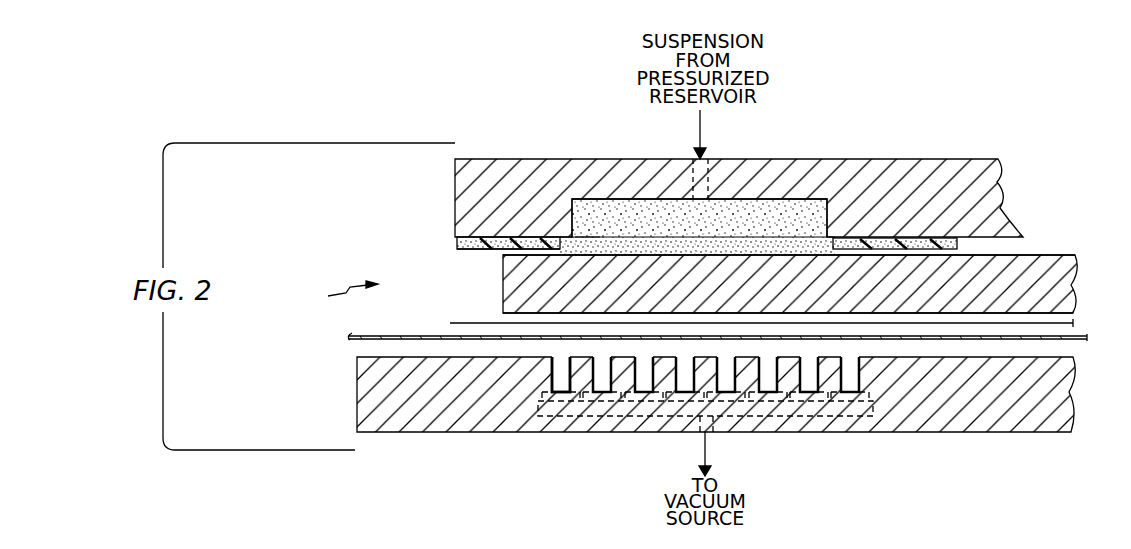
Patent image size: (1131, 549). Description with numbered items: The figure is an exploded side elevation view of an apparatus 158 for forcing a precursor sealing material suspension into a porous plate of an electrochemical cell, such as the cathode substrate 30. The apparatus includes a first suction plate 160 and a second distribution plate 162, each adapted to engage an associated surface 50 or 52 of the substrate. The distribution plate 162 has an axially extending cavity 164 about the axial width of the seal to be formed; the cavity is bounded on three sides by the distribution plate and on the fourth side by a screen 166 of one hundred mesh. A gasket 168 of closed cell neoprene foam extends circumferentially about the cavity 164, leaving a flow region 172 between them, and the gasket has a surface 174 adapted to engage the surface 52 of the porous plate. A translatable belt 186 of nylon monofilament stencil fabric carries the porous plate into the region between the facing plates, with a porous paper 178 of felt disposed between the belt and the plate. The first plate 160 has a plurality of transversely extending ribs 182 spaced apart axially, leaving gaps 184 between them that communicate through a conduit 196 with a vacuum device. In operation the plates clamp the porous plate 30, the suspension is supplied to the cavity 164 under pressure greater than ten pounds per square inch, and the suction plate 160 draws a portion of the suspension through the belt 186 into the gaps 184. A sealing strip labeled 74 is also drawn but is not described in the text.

The apparatus 158 is at (331, 293).
The second distribution plate 162 is at (945, 160).
The cavity 164 is at (690, 224).
The screen 166 is at (589, 233).
The gasket 168 is at (460, 240).
The flow region 172 is at (752, 254).
The surface 174 is at (488, 250).
The right seal strip 74 is at (955, 245).
The surface 52 is at (1043, 255).
The cathode substrate 30 is at (1060, 272).
The surface 50 is at (1068, 321).
The porous paper 178 is at (486, 323).
The translatable belt 186 is at (1087, 338).
The first suction plate 160 is at (1060, 393).
The ribs 182 is at (747, 357).
The gaps 184 is at (600, 357).
The conduit 196 is at (750, 420).